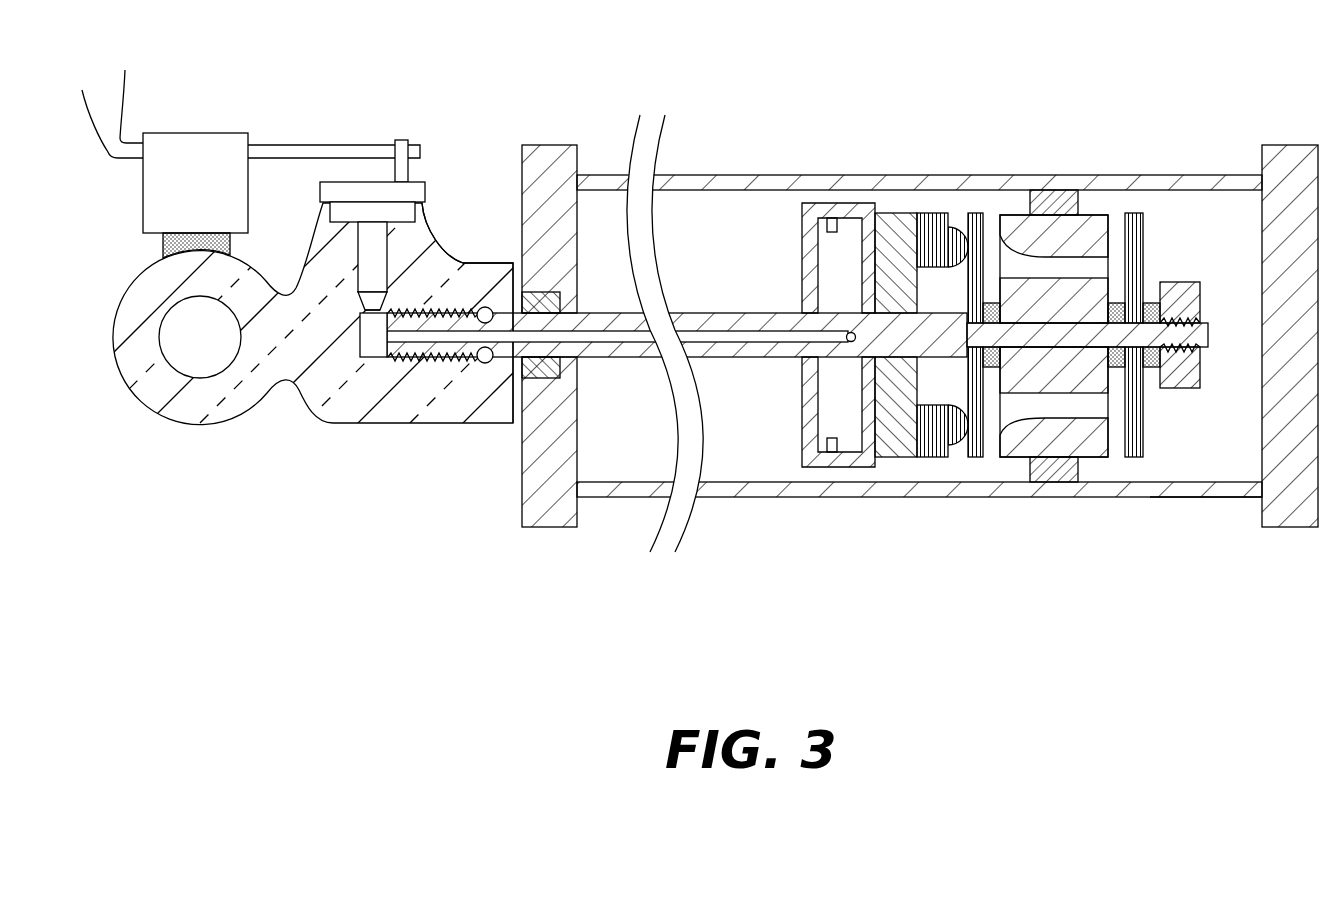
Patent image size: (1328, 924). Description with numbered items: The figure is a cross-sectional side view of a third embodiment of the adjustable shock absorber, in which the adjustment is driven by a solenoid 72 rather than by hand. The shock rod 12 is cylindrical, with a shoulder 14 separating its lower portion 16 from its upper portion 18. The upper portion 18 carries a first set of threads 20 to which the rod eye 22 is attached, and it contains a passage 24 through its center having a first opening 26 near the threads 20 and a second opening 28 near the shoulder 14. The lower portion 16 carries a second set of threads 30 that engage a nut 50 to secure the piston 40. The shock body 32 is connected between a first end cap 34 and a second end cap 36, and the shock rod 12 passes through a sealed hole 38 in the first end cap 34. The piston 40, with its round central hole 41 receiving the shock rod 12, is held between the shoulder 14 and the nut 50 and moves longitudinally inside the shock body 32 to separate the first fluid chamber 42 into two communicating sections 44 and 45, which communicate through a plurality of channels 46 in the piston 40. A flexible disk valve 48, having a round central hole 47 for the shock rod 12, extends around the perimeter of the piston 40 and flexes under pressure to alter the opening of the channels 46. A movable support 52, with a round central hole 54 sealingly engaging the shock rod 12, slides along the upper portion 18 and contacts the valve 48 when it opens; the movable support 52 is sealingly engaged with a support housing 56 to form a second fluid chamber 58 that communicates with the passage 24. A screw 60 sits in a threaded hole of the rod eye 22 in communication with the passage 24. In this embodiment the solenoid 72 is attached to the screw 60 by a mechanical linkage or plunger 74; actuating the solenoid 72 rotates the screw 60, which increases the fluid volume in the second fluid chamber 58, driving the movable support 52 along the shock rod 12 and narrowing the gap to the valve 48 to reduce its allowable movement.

The shock rod 12 is at (715, 318).
The shoulder 14 is at (955, 362).
The lower portion 16 is at (1208, 348).
The upper portion 18 is at (975, 218).
The first set of threads 20 is at (418, 310).
The rod eye 22 is at (125, 287).
The passage 24 is at (598, 333).
The first opening 26 is at (390, 338).
The second opening 28 is at (851, 345).
The second set of threads 30 is at (1180, 312).
The shock body 32 is at (718, 176).
The first end cap 34 is at (549, 148).
The second end cap 36 is at (1290, 148).
The hole 38 is at (572, 292).
The piston 40 is at (1107, 218).
The round central hole 41 is at (1080, 320).
The first fluid chamber 42 is at (708, 239).
The communicating section 44 is at (605, 478).
The communicating section 45 is at (1218, 473).
The channels 46 is at (1053, 212).
The round central hole 47 is at (985, 360).
The valve 48 is at (1043, 255).
The nut 50 is at (1170, 282).
The movable support 52 is at (882, 235).
The round central hole 54 is at (866, 313).
The support housing 56 is at (800, 205).
The second fluid chamber 58 is at (866, 216).
The screw 60 is at (366, 195).
The solenoid 72 is at (196, 140).
The mechanical linkage 74 is at (308, 150).